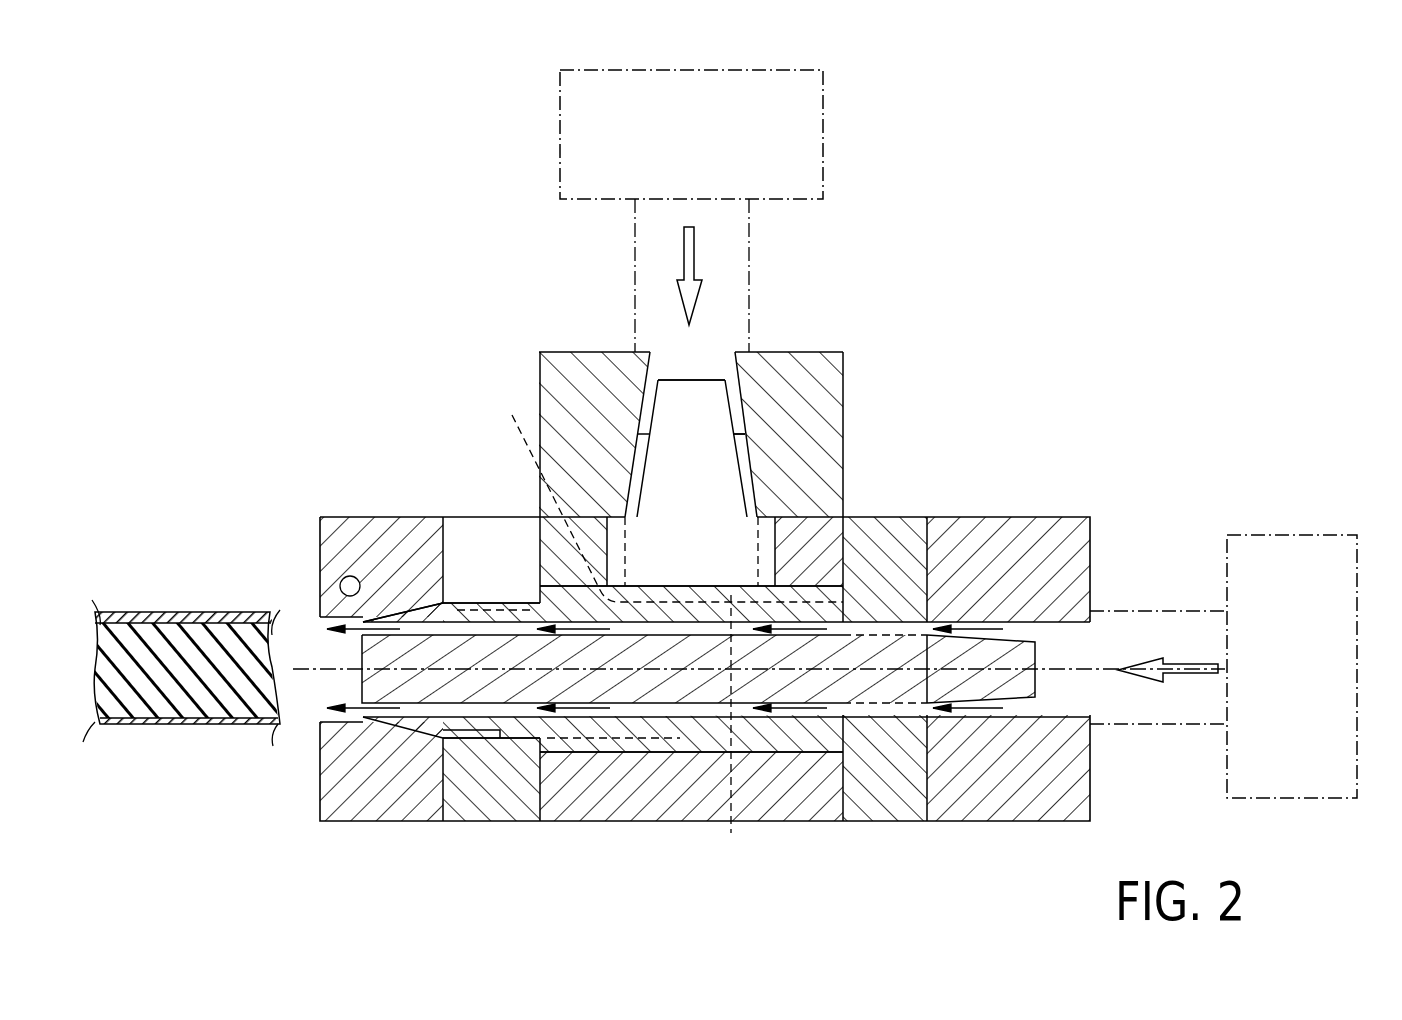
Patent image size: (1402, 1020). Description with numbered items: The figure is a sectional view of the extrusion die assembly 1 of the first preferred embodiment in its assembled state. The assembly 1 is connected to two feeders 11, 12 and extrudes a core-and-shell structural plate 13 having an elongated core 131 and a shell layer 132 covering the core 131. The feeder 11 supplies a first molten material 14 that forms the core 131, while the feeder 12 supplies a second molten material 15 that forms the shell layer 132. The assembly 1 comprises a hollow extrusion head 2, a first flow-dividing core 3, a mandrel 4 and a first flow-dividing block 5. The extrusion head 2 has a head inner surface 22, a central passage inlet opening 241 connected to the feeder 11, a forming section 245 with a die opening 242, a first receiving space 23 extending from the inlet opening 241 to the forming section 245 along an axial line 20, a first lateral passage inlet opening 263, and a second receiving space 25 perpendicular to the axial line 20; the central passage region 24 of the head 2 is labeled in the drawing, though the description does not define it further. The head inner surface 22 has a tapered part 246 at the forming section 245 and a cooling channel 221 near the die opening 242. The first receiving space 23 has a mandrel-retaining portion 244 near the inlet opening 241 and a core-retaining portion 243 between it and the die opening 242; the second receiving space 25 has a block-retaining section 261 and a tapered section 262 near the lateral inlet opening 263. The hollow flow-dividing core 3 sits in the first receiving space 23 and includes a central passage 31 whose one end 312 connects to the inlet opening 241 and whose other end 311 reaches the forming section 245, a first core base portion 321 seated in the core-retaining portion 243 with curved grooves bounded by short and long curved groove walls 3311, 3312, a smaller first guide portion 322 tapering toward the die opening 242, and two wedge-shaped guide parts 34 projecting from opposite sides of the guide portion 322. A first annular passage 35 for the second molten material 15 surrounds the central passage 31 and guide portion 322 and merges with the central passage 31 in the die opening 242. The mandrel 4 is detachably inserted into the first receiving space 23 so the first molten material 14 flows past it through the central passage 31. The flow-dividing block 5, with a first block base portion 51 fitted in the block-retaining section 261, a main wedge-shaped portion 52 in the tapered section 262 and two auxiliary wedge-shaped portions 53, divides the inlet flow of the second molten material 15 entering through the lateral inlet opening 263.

The extrusion die assembly 1 is at (437, 437).
The hollow extrusion head 2 is at (917, 500).
The head inner surface 22 is at (998, 720).
The cooling channel 221 is at (349, 585).
The first receiving space 23 is at (990, 640).
The middle housing block 24 is at (948, 720).
The central passage inlet opening 241 is at (1065, 698).
The die opening 242 is at (318, 718).
The core-retaining portion 243 is at (655, 753).
The mandrel-retaining portion 244 is at (890, 717).
The forming section 245 is at (457, 740).
The tapered part 246 is at (413, 737).
The second receiving space 25 is at (738, 423).
The block-retaining section 261 is at (807, 517).
The tapered section 262 is at (748, 402).
The first lateral passage inlet opening 263 is at (738, 368).
The first flow-dividing core 3 is at (573, 577).
The central passage 31 is at (788, 710).
The another end of central passage 311 is at (366, 718).
The one end of central passage 312 is at (833, 710).
The first core base portion 321 is at (680, 743).
The first guide portion 322 is at (487, 720).
The short curved groove wall 3311 is at (650, 494).
The long curved groove wall 3312 is at (655, 730).
The wedge-shaped guide parts 34 is at (530, 607).
The first annular passage 35 is at (434, 605).
The mandrel 4 is at (500, 677).
The first flow-dividing block 5 is at (662, 370).
The first block base portion 51 is at (660, 545).
The main wedge-shaped portion 52 is at (707, 395).
The auxiliary wedge-shaped portions 53 is at (645, 450).
The feeder 11 is at (1310, 652).
The feeder 12 is at (790, 140).
The core-and-shell structural plate 13 is at (195, 730).
The elongated core 131 is at (152, 690).
The shell layer 132 is at (203, 612).
The first molten material 14 is at (1190, 672).
The second molten material 15 is at (693, 263).
The axial line 20 is at (302, 667).